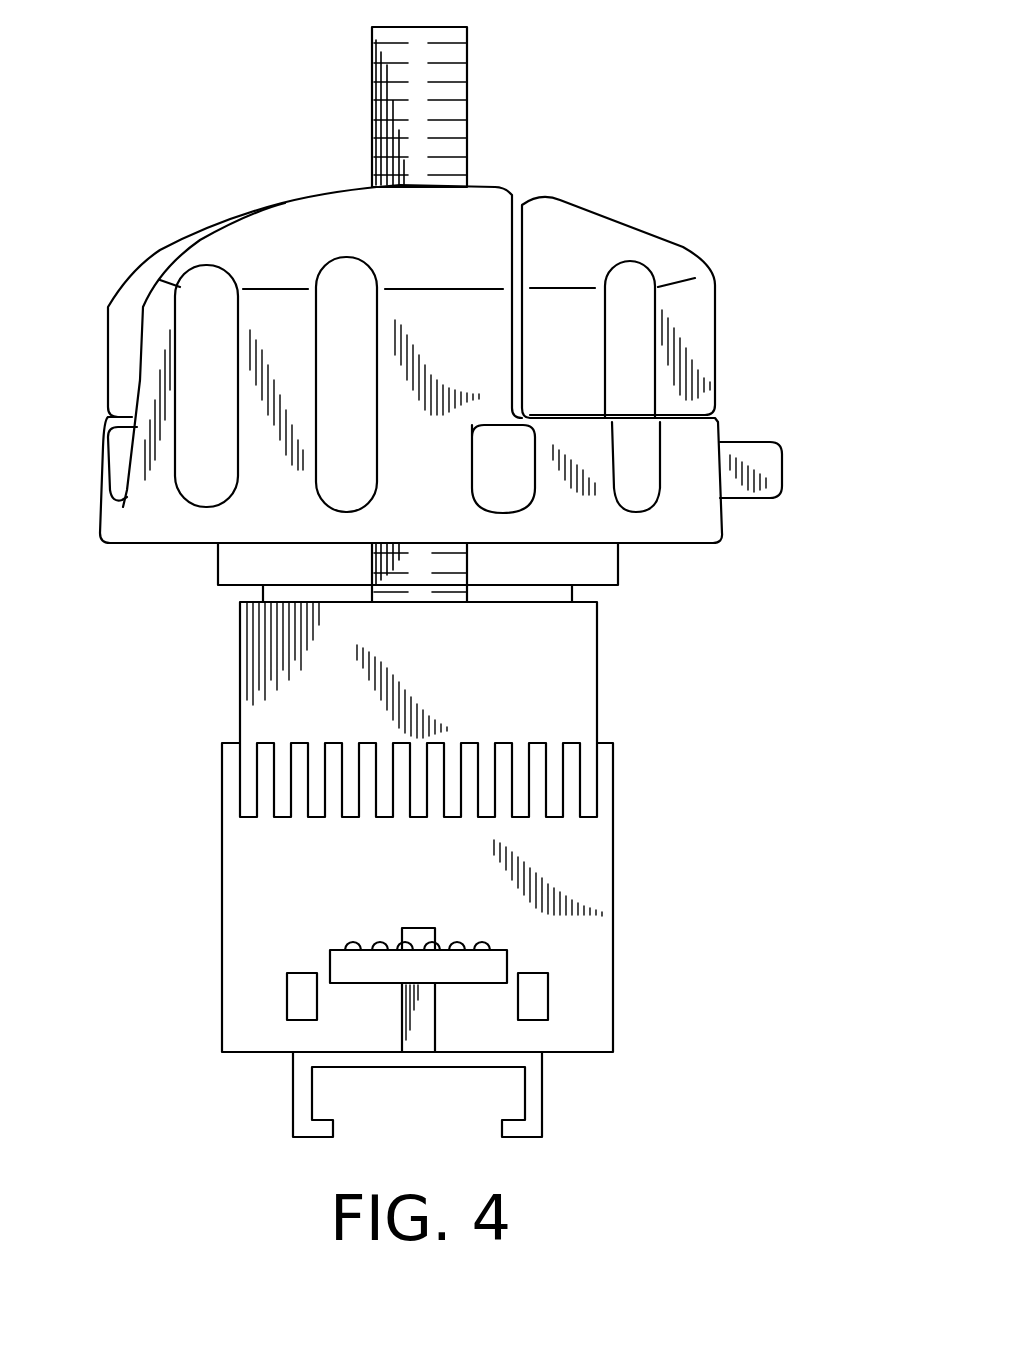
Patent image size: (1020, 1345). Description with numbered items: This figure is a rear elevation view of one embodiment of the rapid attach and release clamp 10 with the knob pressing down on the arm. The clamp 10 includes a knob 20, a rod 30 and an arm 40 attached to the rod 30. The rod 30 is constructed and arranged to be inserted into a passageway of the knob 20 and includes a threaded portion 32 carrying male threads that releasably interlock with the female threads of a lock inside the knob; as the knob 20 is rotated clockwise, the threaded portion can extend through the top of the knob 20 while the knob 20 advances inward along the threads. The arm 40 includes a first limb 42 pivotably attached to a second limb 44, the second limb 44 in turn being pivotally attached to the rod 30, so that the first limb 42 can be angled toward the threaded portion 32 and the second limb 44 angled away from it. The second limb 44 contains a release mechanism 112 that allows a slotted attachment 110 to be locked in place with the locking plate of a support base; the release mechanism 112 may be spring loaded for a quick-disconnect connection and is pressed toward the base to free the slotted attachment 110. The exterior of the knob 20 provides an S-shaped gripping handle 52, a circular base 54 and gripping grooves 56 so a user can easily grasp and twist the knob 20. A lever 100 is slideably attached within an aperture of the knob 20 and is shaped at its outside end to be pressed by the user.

The clamp 10 is at (852, 184).
The knob 20 is at (626, 210).
The rod 30 is at (483, 72).
The threaded portion 32 is at (397, 583).
The arm 40 is at (210, 789).
The first limb 42 is at (605, 577).
The second limb 44 is at (592, 855).
The gripping handle 52 is at (262, 240).
The circular base 54 is at (708, 517).
The gripping grooves 56 is at (345, 483).
The lever 100 is at (752, 442).
The slotted attachment 110 is at (544, 1102).
The release mechanism 112 is at (508, 958).